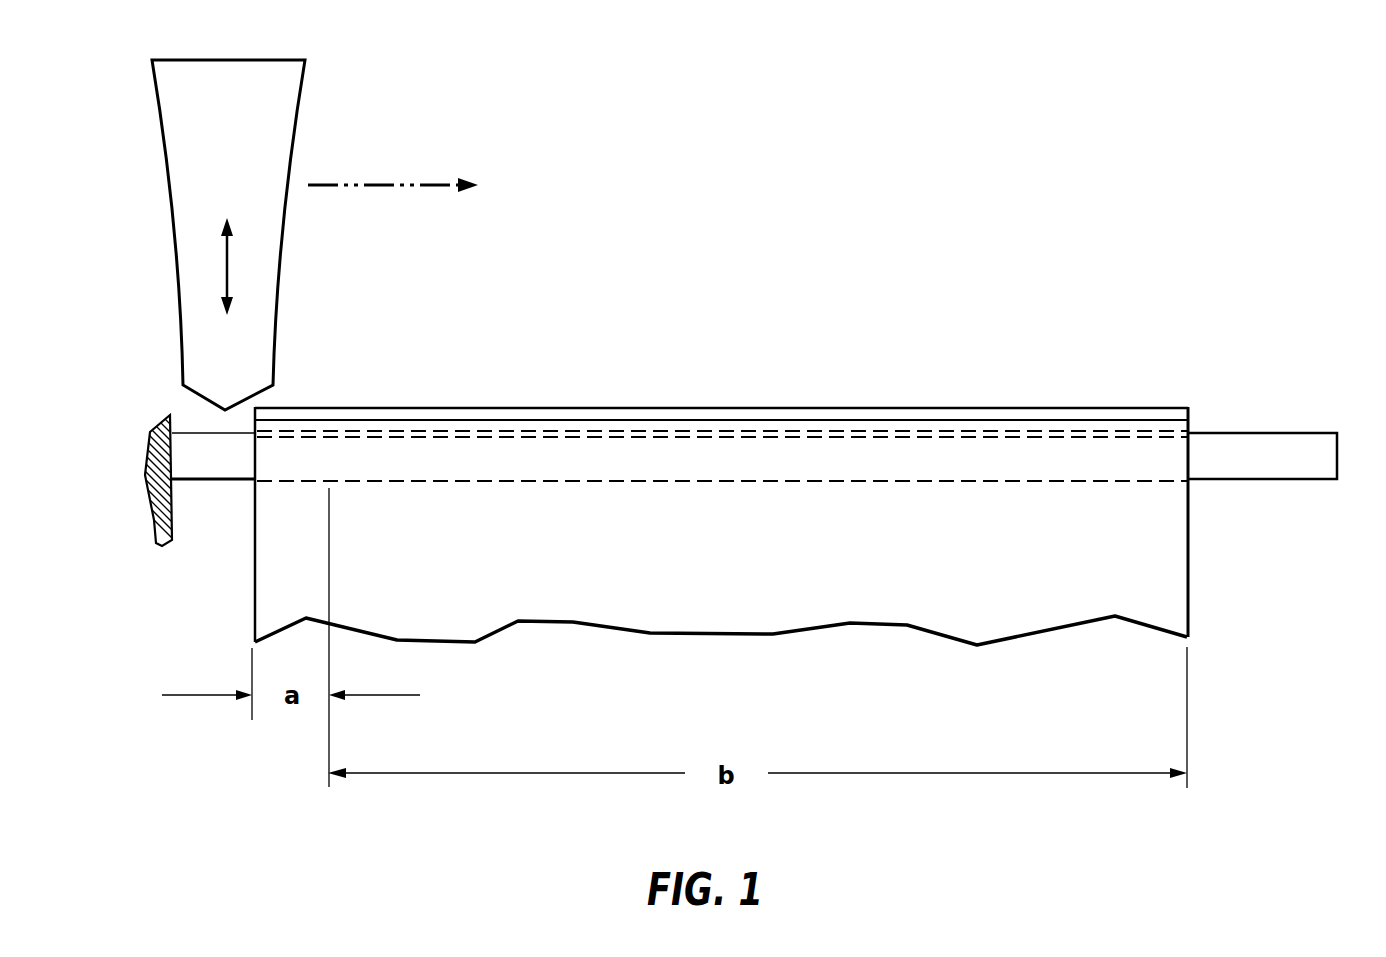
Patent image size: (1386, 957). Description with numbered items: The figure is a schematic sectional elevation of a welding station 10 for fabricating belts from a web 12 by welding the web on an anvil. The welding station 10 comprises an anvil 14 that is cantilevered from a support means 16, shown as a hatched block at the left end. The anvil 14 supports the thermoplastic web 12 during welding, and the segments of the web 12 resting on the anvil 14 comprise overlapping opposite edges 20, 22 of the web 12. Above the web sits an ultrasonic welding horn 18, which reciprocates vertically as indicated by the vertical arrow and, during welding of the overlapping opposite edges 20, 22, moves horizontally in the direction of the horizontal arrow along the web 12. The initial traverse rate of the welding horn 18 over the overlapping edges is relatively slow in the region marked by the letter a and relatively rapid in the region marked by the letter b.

The welding station 10 is at (735, 228).
The web 12 is at (1188, 590).
The anvil 14 is at (1252, 472).
The support means 16 is at (172, 517).
The ultrasonic welding horn 18 is at (282, 150).
The overlapping opposite edge 20 is at (1190, 425).
The overlapping opposite edge 22 is at (1192, 407).